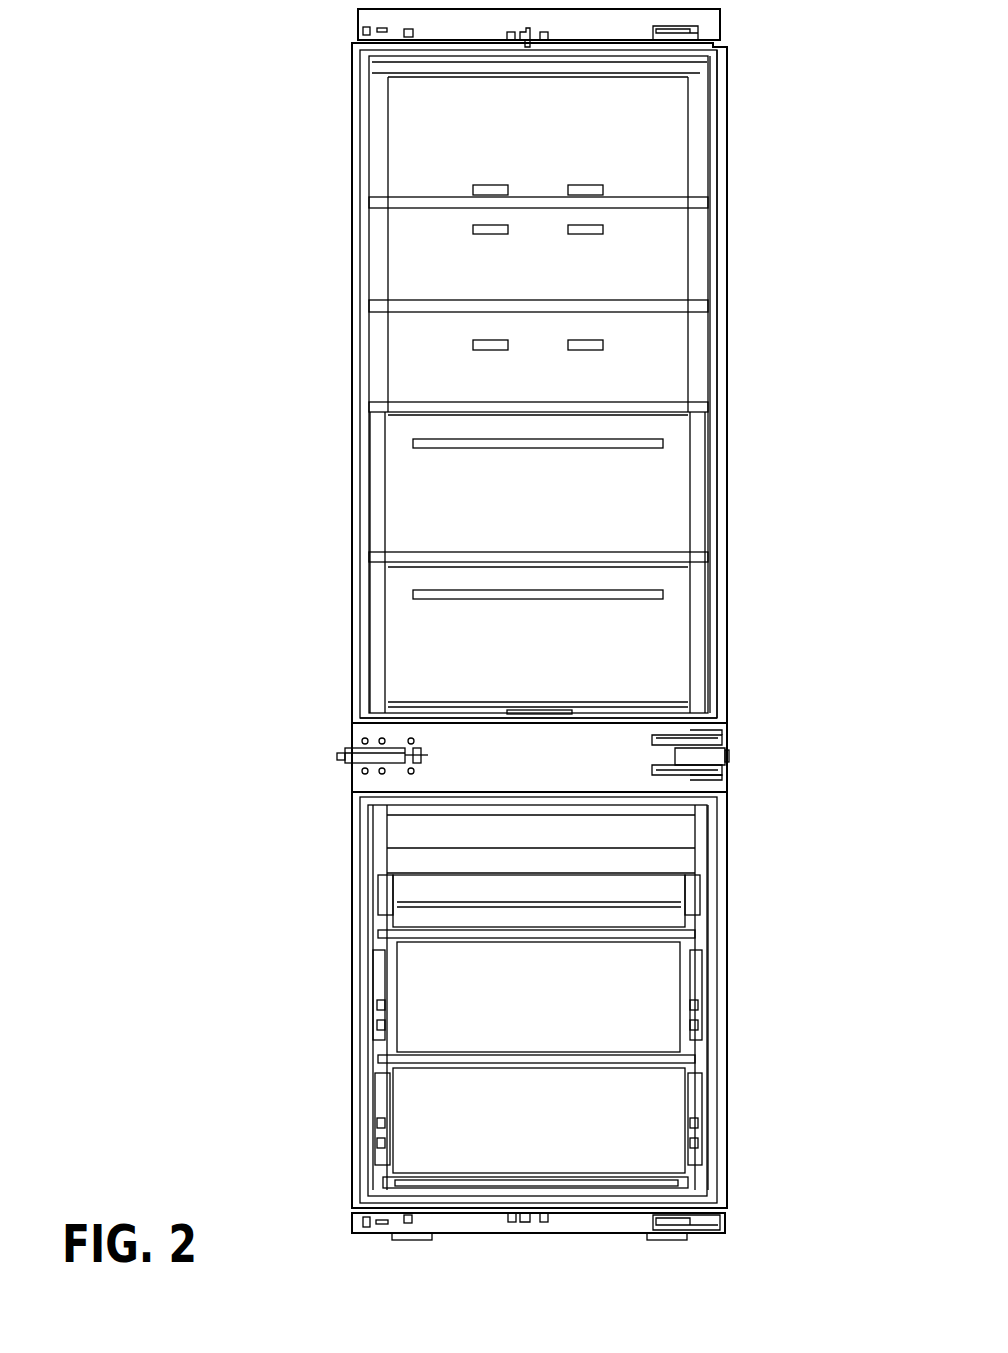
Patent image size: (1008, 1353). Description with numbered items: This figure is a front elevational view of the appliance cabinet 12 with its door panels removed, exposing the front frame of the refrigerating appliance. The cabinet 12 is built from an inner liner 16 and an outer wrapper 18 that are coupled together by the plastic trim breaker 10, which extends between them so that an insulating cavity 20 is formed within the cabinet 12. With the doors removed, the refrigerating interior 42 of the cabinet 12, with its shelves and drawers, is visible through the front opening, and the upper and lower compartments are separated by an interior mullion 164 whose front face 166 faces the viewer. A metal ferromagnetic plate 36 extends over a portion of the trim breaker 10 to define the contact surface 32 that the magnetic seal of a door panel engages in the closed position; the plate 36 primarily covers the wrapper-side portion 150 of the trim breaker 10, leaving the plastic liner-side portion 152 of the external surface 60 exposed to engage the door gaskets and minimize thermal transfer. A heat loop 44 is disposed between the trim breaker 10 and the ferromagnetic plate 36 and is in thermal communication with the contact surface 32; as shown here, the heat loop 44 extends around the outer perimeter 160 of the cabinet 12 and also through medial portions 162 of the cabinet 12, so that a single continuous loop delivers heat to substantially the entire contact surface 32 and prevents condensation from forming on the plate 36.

The trim breaker 10 is at (735, 378).
The cabinet 12 is at (300, 154).
The inner liner 16 is at (660, 134).
The outer wrapper 18 is at (725, 58).
The insulating cavity 20 is at (717, 915).
The contact surface 32 is at (717, 528).
The ferromagnetic plate 36 is at (358, 487).
The refrigerating interior 42 is at (430, 254).
The heat loop 44 is at (352, 633).
The external surface 60 is at (710, 458).
The wrapper-side portion 150 is at (727, 173).
The liner-side portion 152 is at (370, 126).
The outer perimeter 160 is at (727, 262).
The medial portions 162 is at (742, 755).
The interior mullion 164 is at (605, 719).
The face 166 is at (506, 768).